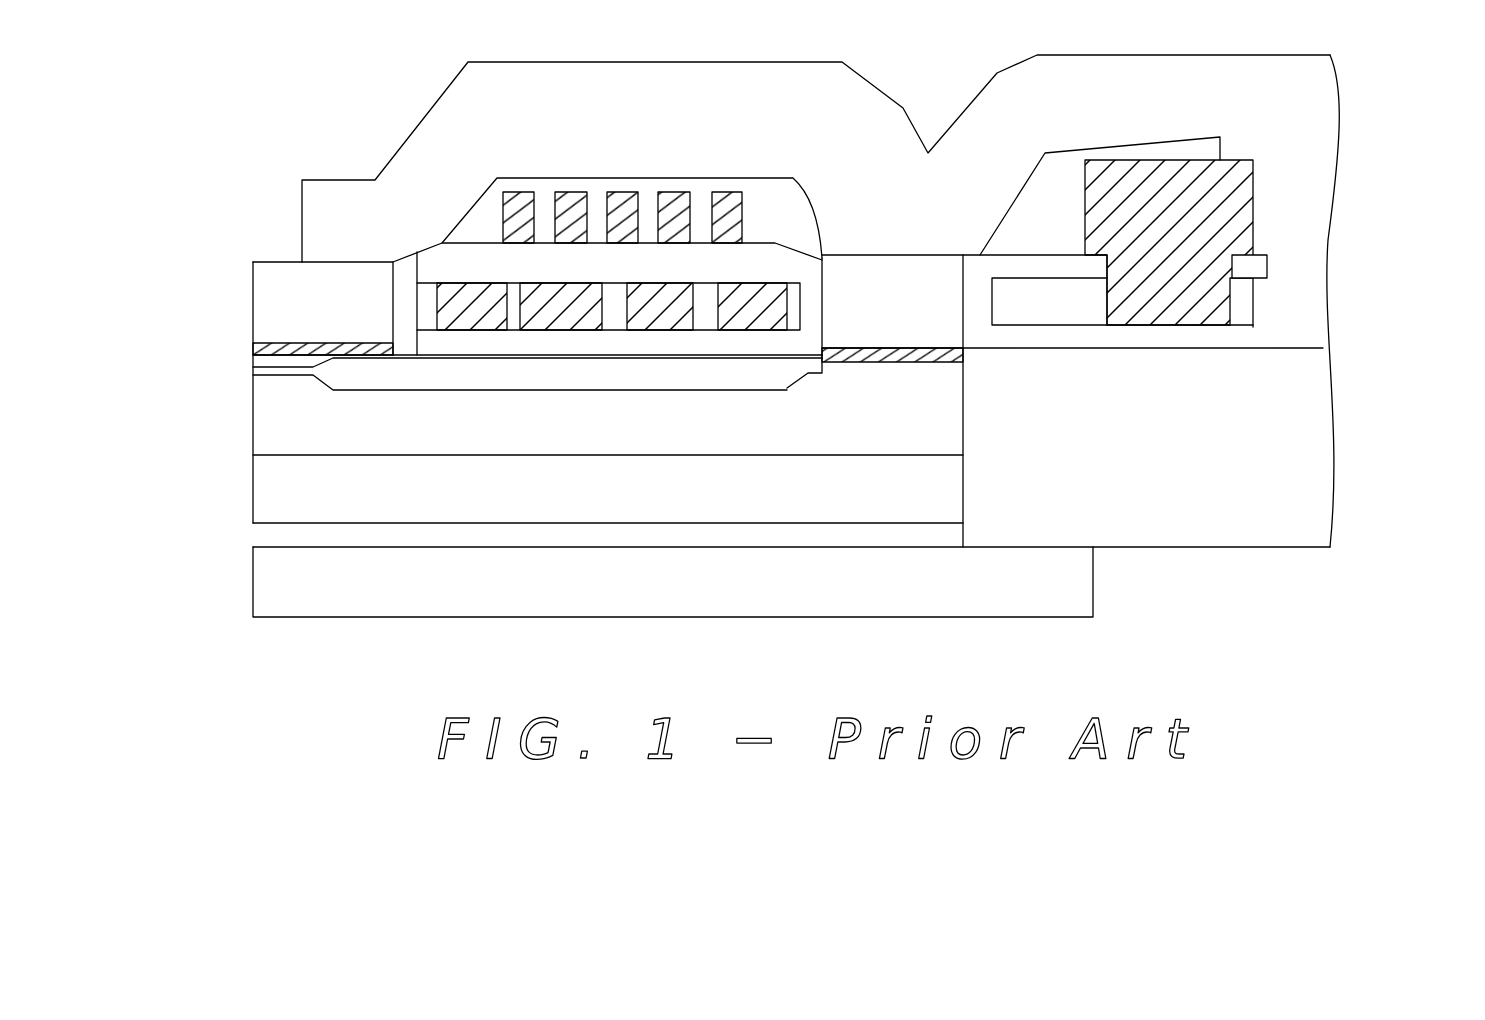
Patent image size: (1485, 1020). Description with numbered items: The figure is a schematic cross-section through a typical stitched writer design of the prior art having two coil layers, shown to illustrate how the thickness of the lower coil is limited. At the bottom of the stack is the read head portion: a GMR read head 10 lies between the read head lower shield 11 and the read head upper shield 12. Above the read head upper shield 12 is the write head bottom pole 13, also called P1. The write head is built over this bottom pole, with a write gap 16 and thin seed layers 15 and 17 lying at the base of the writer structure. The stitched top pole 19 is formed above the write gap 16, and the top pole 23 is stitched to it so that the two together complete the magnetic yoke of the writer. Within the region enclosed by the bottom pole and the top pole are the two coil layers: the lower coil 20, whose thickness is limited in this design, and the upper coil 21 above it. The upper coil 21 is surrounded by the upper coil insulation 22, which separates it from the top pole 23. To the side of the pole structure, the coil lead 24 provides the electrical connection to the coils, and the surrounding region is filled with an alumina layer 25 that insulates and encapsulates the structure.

The GMR read head 10 is at (278, 536).
The read head lower shield 11 is at (278, 589).
The read head upper shield 12 is at (278, 490).
The write head bottom pole 13 is at (278, 418).
The seed layer 15 is at (258, 372).
The write gap 16 is at (270, 363).
The seed layer 17 is at (258, 349).
The stitched top pole 19 is at (277, 287).
The lower coil 20 is at (447, 292).
The upper coil 21 is at (576, 205).
The upper coil insulation 22 is at (480, 220).
The top pole 23 is at (327, 207).
The coil lead 24 is at (1233, 207).
The alumina layer 25 is at (1300, 455).